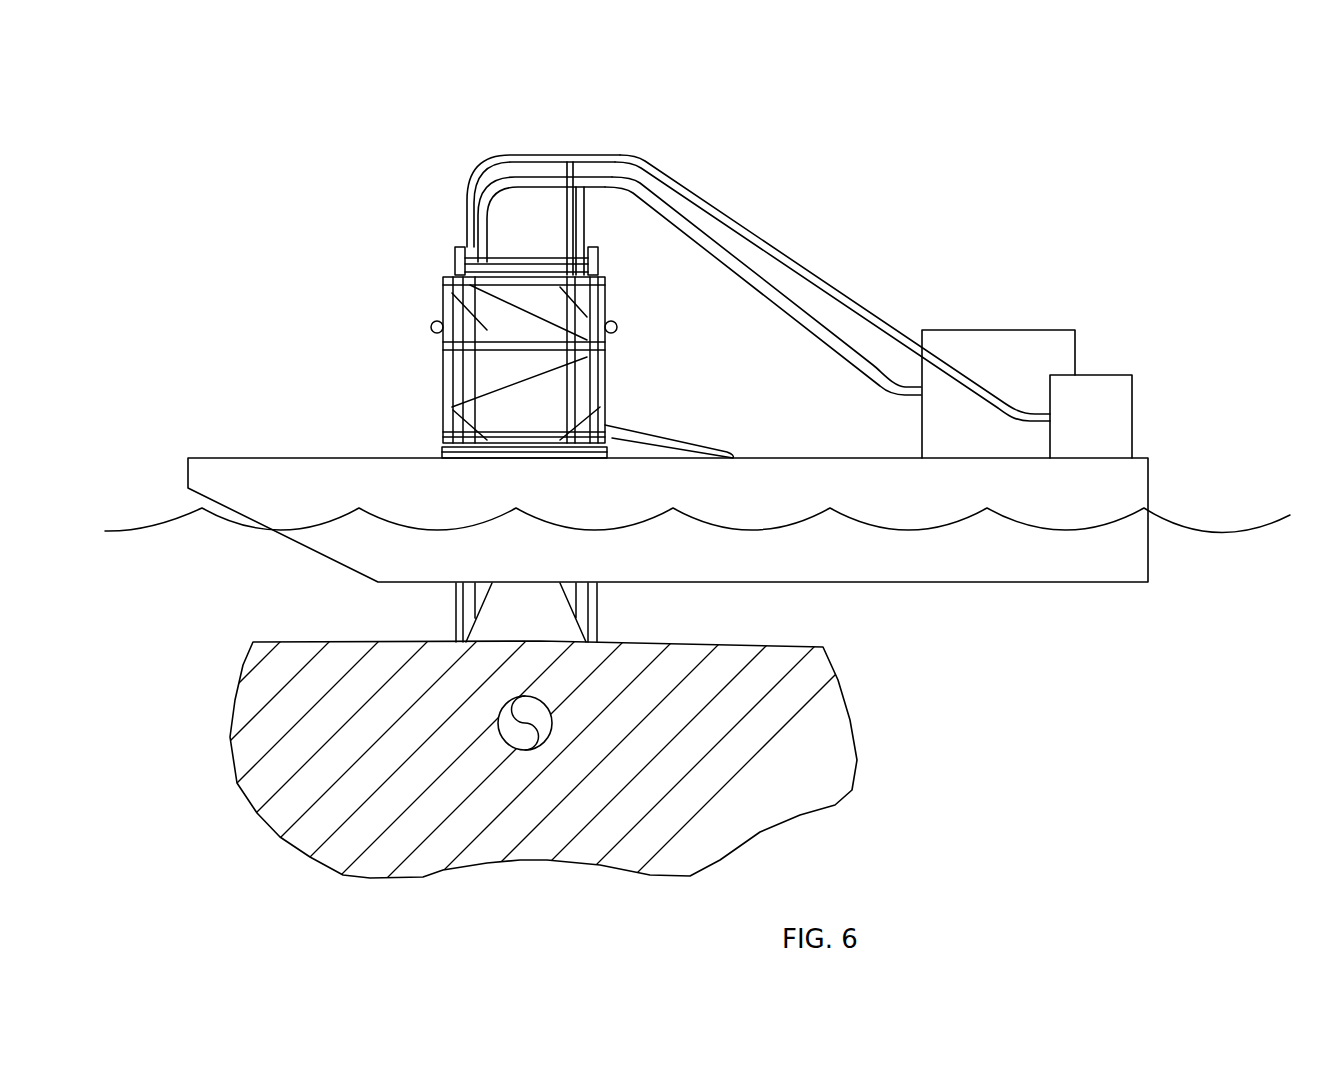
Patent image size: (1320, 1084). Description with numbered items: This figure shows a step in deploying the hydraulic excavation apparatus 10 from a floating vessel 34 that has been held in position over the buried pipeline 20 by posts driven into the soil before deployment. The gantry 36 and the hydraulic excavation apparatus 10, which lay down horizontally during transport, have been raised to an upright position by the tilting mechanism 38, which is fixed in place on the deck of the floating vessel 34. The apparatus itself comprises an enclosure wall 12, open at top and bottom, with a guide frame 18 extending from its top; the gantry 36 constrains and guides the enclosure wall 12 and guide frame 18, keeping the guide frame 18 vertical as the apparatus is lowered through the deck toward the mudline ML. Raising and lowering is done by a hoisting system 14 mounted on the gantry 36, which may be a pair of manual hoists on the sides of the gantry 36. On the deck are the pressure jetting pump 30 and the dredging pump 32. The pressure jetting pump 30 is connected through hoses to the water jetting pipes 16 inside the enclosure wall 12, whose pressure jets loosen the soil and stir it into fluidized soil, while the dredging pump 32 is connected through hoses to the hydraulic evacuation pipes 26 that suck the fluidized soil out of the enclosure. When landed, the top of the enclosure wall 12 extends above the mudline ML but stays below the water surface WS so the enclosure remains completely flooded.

The hydraulic excavation apparatus 10 is at (569, 126).
The enclosure wall 12 is at (602, 631).
The hoisting system 14 is at (430, 327).
The water jetting pipes 16 is at (834, 282).
The guide frame 18 is at (462, 244).
The pipeline 20 is at (558, 717).
The hydraulic evacuation pipes 26 is at (679, 210).
The pressure jetting pump 30 is at (1100, 373).
The dredging pump 32 is at (1050, 328).
The floating vessel 34 is at (1150, 478).
The gantry 36 is at (445, 278).
The tilting mechanism 38 is at (642, 431).
The mudline ML is at (264, 641).
The water surface WS is at (1230, 538).